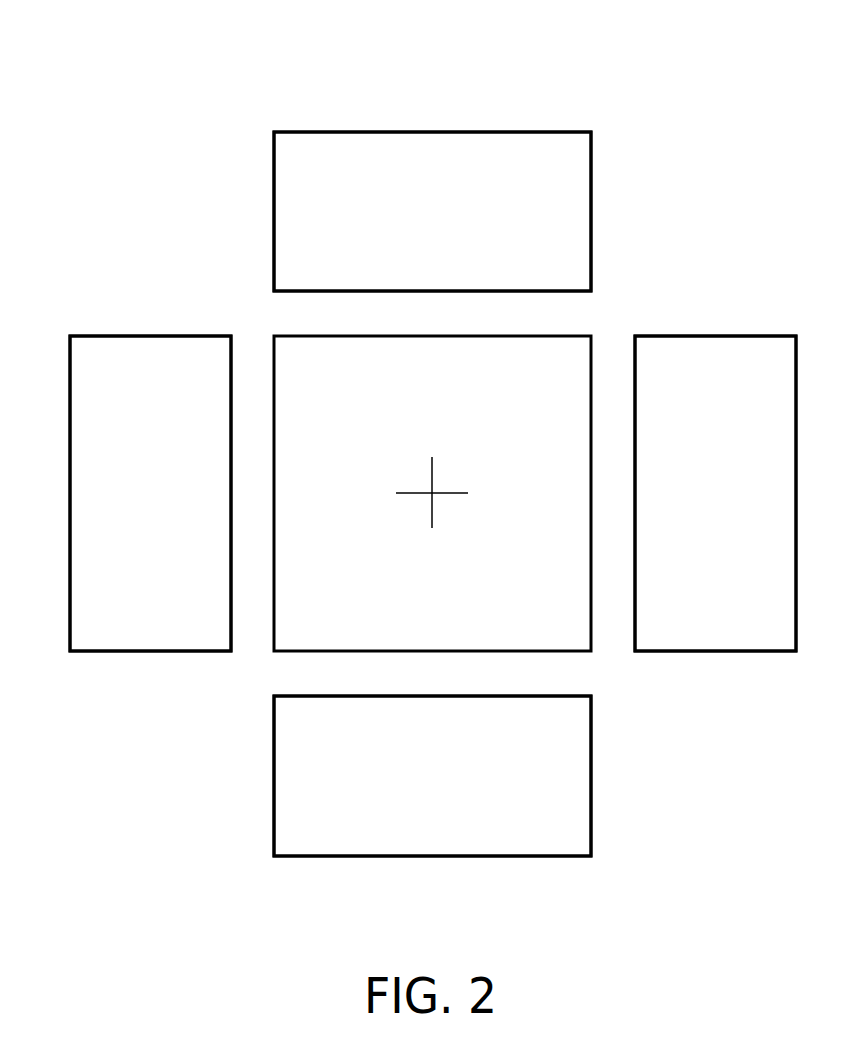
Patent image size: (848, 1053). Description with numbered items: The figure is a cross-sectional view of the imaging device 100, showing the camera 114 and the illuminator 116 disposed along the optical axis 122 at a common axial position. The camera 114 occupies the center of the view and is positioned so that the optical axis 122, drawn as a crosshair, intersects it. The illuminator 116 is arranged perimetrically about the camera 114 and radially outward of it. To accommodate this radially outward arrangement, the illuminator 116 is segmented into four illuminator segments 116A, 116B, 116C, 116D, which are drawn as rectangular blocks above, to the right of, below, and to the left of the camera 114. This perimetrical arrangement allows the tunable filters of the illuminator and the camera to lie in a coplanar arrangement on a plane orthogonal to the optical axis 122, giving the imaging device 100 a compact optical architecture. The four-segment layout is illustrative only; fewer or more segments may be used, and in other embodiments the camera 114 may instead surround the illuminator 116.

The imaging device 100 is at (79, 844).
The camera 114 is at (526, 607).
The illuminator 116 is at (578, 112).
The illuminator segment 116A is at (458, 223).
The illuminator segment 116B is at (748, 503).
The illuminator segment 116C is at (456, 788).
The illuminator segment 116D is at (181, 503).
The optical axis 122 is at (437, 486).